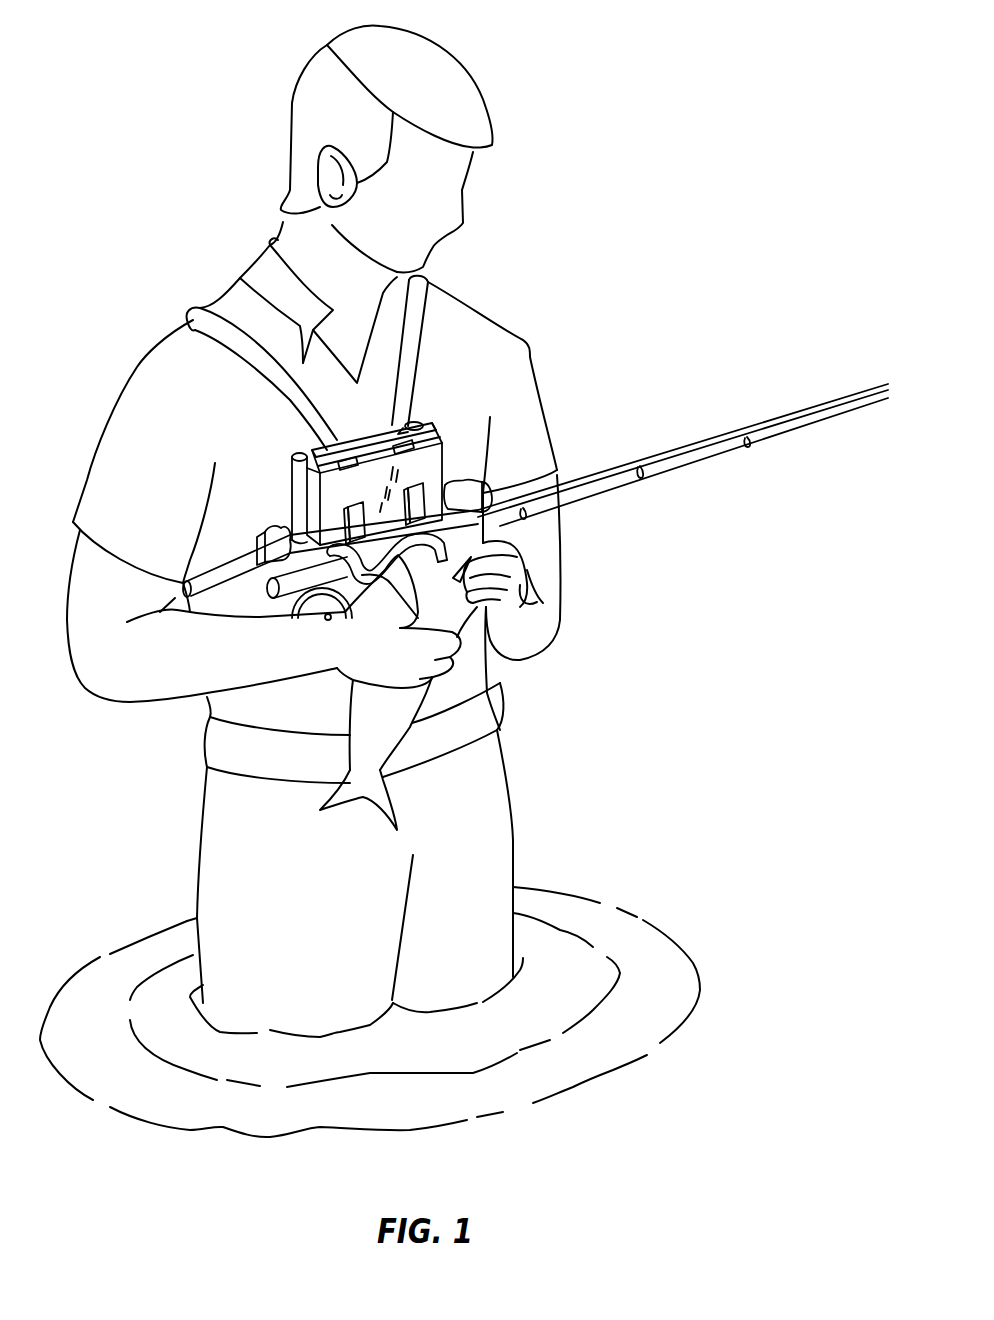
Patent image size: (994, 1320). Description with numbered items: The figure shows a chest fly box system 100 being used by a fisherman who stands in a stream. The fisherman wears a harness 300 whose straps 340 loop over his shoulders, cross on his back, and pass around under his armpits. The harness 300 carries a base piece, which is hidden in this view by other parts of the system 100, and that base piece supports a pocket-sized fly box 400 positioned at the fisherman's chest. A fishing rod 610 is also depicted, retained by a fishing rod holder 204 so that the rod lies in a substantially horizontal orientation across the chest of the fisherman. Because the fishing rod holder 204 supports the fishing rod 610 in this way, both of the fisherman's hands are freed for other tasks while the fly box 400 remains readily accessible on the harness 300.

The chest fly box system 100 is at (627, 385).
The fishing rod holder 204 is at (405, 620).
The harness 300 is at (418, 387).
The straps 340 is at (420, 305).
The pocket-sized fly box 400 is at (453, 482).
The fishing rod 610 is at (675, 452).